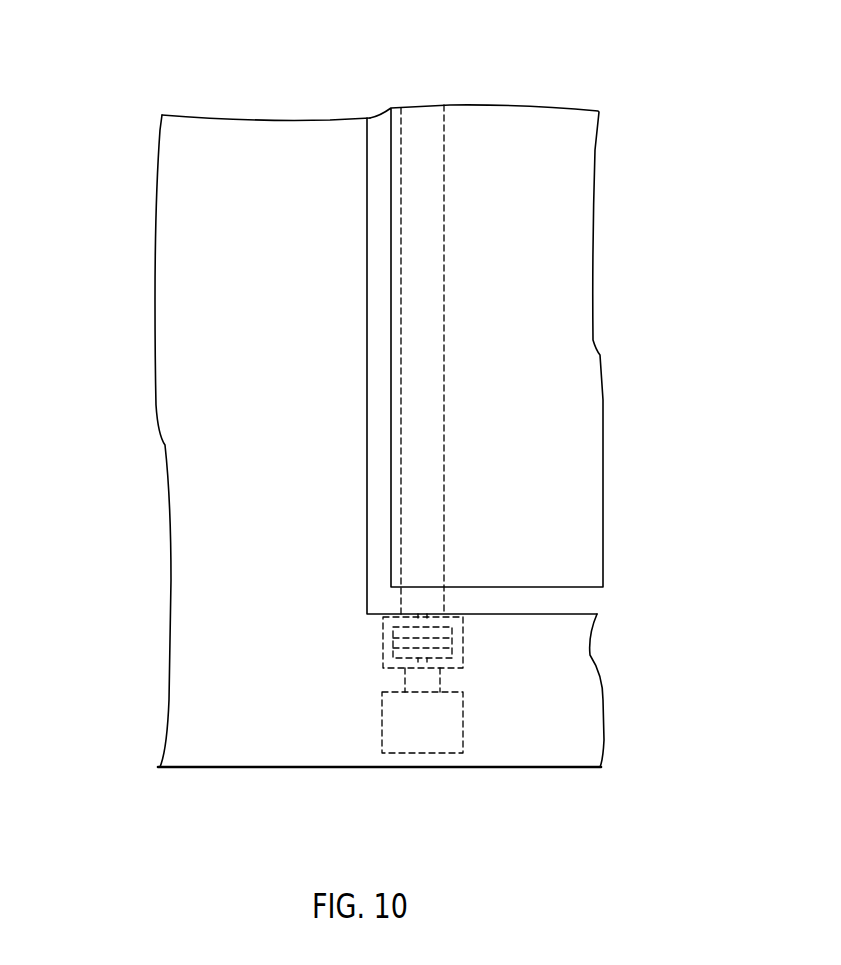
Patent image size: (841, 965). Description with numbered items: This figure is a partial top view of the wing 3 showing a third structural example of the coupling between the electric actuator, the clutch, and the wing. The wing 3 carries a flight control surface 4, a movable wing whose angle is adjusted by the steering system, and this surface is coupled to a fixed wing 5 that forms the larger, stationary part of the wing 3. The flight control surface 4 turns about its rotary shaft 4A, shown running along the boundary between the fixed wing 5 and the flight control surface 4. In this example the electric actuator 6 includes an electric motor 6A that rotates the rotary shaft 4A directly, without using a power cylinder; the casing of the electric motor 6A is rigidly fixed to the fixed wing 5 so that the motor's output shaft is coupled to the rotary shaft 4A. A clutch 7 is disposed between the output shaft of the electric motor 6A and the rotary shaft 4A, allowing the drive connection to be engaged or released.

The wing 3 is at (250, 93).
The flight control surface 4 is at (582, 449).
The rotary shaft 4A is at (423, 343).
The fixed wing 5 is at (190, 575).
The electric actuator 6 is at (407, 754).
The electric motor 6A is at (427, 725).
The clutch 7 is at (465, 641).